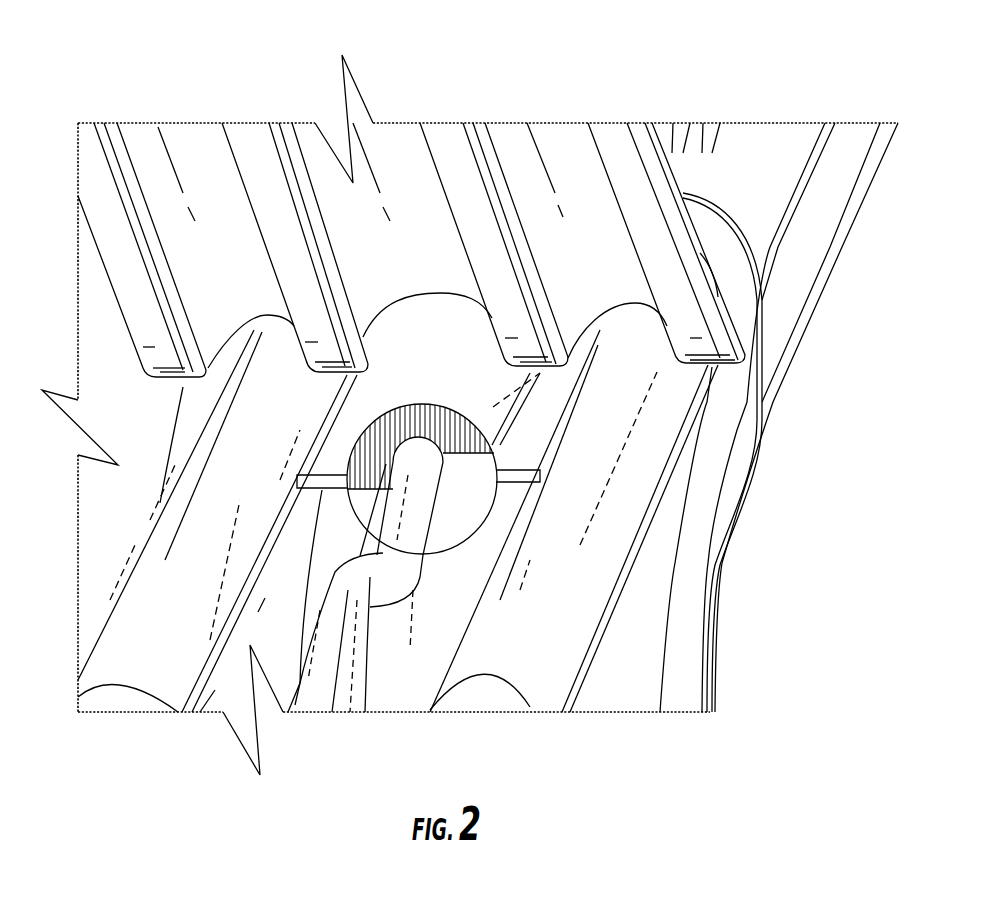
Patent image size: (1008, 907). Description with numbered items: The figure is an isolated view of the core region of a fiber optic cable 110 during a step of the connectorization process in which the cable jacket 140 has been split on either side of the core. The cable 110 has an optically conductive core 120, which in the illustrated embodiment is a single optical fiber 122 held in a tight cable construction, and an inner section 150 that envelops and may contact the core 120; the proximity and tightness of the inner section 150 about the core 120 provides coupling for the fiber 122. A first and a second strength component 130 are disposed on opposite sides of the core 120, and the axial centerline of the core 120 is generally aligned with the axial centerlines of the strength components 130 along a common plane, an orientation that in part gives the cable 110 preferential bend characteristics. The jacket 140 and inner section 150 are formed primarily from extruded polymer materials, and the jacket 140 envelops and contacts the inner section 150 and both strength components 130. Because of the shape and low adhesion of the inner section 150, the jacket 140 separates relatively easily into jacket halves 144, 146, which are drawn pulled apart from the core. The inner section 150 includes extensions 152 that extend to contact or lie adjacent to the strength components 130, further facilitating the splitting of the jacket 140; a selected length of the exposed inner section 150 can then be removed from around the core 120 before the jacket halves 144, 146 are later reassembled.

The fiber optic cable 110 is at (161, 115).
The optically conductive core 120 is at (372, 469).
The optical fiber 122 is at (345, 673).
The strength component 130 is at (172, 668).
The cable jacket 140 is at (757, 138).
The jacket half 144 is at (520, 152).
The jacket half 146 is at (233, 703).
The inner section 150 is at (497, 447).
The extension 152 is at (324, 485).